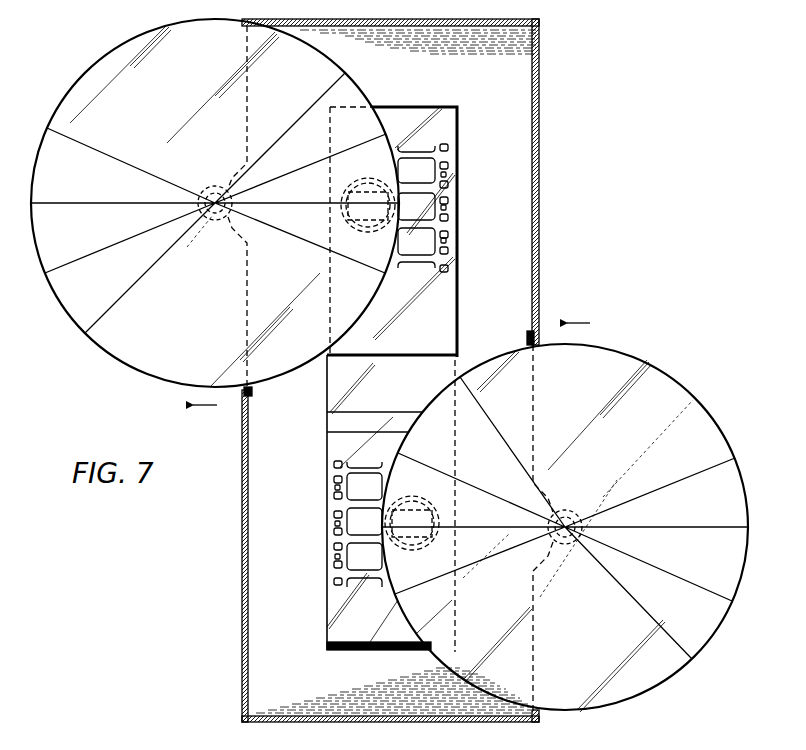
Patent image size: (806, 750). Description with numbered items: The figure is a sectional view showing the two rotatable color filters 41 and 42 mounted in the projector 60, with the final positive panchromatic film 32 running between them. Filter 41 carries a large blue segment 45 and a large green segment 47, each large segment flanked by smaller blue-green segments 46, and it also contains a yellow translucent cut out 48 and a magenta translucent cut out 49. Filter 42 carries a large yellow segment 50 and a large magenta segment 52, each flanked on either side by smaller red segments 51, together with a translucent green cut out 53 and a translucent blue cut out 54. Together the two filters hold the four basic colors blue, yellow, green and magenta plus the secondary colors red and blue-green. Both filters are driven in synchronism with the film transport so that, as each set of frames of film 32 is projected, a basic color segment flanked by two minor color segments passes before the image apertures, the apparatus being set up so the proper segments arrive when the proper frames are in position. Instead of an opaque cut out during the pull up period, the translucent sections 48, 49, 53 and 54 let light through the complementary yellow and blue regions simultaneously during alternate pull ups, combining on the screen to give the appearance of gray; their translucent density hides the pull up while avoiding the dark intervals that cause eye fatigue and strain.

The blue segment 45 is at (93, 71).
The blue-green segments 46 is at (47, 146).
The yellow translucent cut out 48 is at (47, 253).
The filter 41 is at (98, 352).
The green segment 47 is at (153, 358).
The magenta translucent cut out 49 is at (384, 151).
The projector 60 is at (541, 205).
The final positive panchromatic film 32 is at (459, 290).
The filter 42 is at (603, 340).
The yellow segment 50 is at (673, 395).
The red segments 51 is at (727, 473).
The green translucent cut out 53 is at (405, 462).
The blue translucent cut out 54 is at (707, 642).
The magenta segment 52 is at (652, 680).